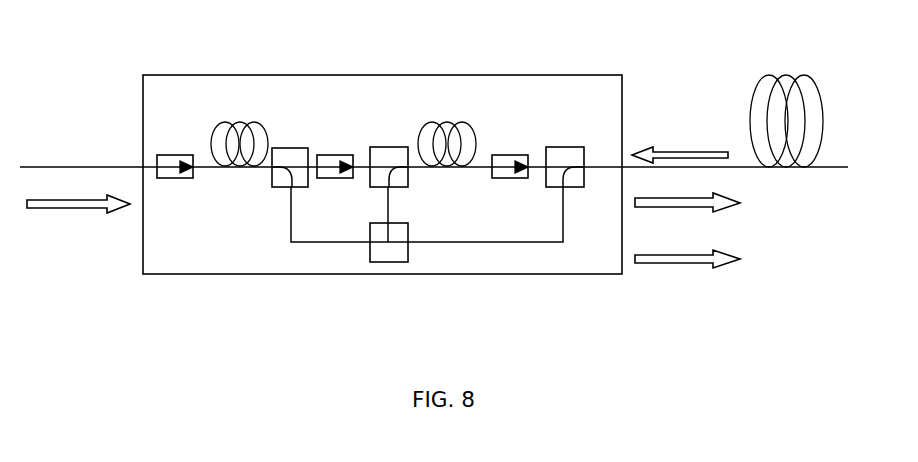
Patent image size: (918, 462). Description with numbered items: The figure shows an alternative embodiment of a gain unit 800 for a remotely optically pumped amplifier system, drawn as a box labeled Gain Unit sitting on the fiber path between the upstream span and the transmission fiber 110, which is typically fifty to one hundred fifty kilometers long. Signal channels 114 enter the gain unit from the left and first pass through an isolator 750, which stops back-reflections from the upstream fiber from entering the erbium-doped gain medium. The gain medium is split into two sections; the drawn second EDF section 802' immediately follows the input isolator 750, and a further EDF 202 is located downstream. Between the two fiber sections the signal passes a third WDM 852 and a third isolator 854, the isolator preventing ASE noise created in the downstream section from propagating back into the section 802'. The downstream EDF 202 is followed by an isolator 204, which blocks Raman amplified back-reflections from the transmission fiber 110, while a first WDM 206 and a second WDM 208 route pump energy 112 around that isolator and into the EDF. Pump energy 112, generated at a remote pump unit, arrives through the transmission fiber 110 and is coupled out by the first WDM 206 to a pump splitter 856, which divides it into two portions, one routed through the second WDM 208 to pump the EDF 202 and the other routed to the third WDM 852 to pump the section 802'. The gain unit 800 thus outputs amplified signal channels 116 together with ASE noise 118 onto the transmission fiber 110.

The gain unit 800 is at (624, 100).
The second isolator 750 is at (192, 141).
The second EDF section 802' is at (248, 134).
The third WDM 852 is at (282, 148).
The third isolator 854 is at (350, 141).
The second WDM 208 is at (378, 147).
The EDF 202 is at (447, 123).
The isolator 204 is at (525, 139).
The first WDM 206 is at (555, 147).
The pump splitter 856 is at (408, 238).
The transmission fiber 110 is at (777, 80).
The pump energy 112 is at (690, 115).
The signal channels 114 is at (38, 197).
The amplified signal channels 116 is at (647, 197).
The ASE noise 118 is at (670, 267).